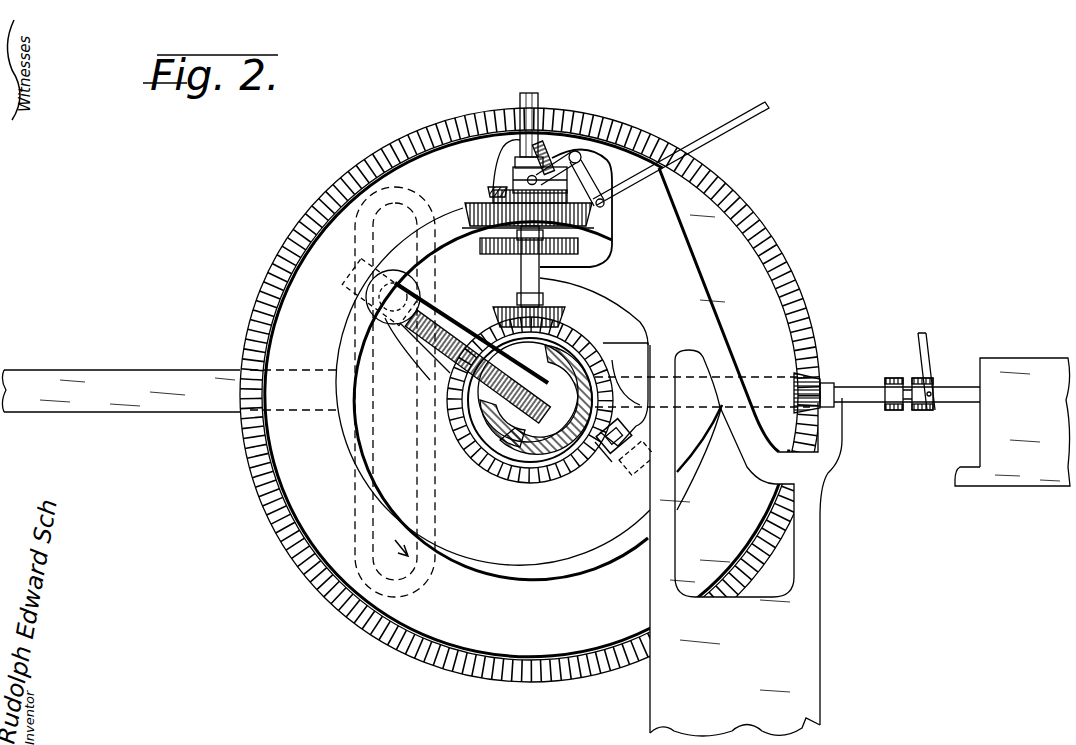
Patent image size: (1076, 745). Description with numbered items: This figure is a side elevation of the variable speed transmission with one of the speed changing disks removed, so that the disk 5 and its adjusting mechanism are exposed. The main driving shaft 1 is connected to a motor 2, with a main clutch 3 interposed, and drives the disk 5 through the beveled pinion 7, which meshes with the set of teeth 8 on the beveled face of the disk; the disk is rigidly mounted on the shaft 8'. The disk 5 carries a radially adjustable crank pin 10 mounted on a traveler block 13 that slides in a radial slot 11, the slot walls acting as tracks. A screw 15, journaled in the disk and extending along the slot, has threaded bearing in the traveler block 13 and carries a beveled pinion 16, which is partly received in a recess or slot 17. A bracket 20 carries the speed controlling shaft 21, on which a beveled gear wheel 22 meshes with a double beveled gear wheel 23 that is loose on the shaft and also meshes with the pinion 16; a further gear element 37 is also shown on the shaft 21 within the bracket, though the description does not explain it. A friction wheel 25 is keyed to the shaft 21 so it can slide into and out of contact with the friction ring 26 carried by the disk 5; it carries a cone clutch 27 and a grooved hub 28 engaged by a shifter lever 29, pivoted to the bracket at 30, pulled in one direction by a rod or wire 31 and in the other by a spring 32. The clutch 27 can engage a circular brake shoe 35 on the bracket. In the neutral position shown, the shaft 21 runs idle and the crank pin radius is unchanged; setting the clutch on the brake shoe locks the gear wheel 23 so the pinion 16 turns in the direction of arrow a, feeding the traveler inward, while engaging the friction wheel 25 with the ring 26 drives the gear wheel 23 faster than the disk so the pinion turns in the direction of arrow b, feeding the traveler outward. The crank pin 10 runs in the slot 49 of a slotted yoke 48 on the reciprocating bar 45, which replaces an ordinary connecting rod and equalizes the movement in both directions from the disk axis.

The main driving shaft 1 is at (953, 387).
The motor 2 is at (1012, 422).
The main clutch 3 is at (922, 410).
The disk 5 is at (763, 302).
The beveled pinion 7 is at (817, 370).
The set of teeth 8 is at (562, 395).
The shaft 8' is at (531, 497).
The crank pin 10 is at (400, 320).
The radial slot 11 is at (443, 373).
The traveler block 13 is at (410, 337).
The screw 15 is at (497, 458).
The beveled pinion 16 is at (587, 460).
The recess or slot 17 is at (600, 477).
The bracket 20 is at (738, 452).
The speed controlling shaft 21 is at (530, 95).
The beveled gear wheel 22 is at (565, 315).
The double beveled gear wheel 23 is at (597, 340).
The friction wheel 25 is at (465, 207).
The friction ring 26 is at (438, 237).
The cone clutch 27 is at (490, 192).
The grooved hub 28 is at (512, 170).
The shifter lever 29 is at (590, 178).
The pivot 30 is at (582, 152).
The rod or wire 31 is at (718, 140).
The spring 32 is at (560, 140).
The circular brake shoe 35 is at (495, 190).
The spur gear 37 is at (578, 250).
The reciprocating bar 45 is at (120, 413).
The slotted yoke 48 is at (353, 533).
The slot 49 is at (377, 547).
The arrow a is at (624, 394).
The arrow b is at (630, 452).